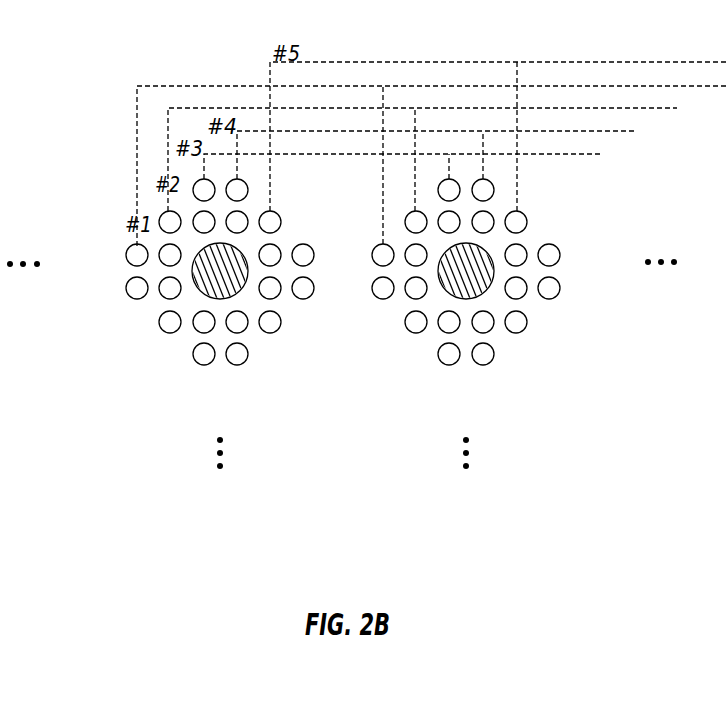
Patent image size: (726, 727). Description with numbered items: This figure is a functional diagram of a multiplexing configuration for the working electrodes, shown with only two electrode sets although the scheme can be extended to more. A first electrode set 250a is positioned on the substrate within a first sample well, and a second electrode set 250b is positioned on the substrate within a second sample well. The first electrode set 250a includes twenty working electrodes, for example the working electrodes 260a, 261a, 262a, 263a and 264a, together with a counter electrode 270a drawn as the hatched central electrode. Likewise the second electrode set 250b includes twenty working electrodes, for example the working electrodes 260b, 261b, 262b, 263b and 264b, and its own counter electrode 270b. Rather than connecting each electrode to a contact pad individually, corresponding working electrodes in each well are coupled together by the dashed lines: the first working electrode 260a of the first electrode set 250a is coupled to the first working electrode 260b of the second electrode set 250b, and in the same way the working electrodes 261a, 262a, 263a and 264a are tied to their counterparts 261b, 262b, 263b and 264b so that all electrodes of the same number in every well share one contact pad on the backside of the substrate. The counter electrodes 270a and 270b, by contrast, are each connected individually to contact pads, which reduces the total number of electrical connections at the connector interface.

The first electrode set 250a is at (171, 416).
The second electrode set 250b is at (423, 416).
The first working electrode 260a is at (128, 248).
The first working electrode 260b is at (375, 264).
The working electrode 261a is at (164, 213).
The working electrode 261b is at (404, 221).
The working electrode 262a is at (208, 181).
The working electrode 262b is at (453, 181).
The working electrode 263a is at (248, 191).
The working electrode 263b is at (494, 191).
The working electrode 264a is at (281, 224).
The working electrode 264b is at (527, 224).
The counter electrode 270a is at (220, 276).
The counter electrode 270b is at (466, 276).